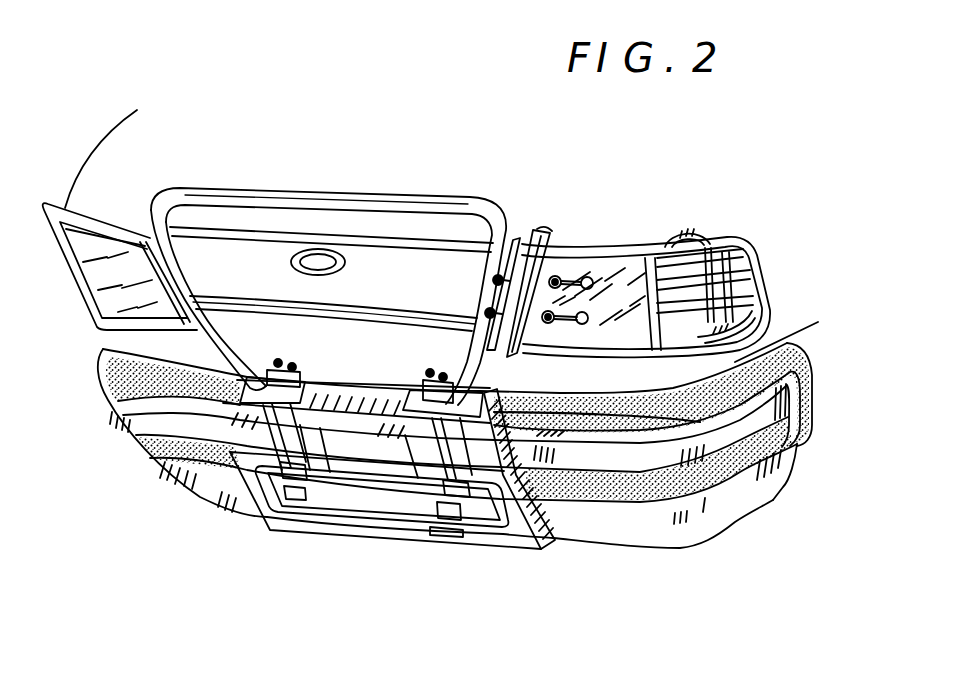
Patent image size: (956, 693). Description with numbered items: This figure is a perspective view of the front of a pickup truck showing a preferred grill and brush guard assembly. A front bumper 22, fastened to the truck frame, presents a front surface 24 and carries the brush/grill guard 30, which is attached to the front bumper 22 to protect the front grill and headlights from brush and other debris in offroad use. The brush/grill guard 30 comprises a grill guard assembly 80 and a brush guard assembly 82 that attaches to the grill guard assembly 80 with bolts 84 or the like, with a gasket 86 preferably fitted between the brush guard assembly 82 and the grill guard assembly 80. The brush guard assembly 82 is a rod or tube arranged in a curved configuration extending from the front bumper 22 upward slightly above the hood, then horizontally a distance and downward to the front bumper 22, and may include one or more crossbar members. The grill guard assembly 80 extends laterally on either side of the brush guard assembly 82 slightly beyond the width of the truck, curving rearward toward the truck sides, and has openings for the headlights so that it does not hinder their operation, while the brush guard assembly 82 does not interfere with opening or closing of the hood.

The front bumper 22 is at (793, 438).
The front surface 24 is at (655, 420).
The brush/grill guard 30 is at (497, 534).
The grill guard assembly 80 is at (355, 190).
The brush guard assembly 82 is at (645, 250).
The bolts 84 is at (589, 279).
The gasket 86 is at (528, 232).